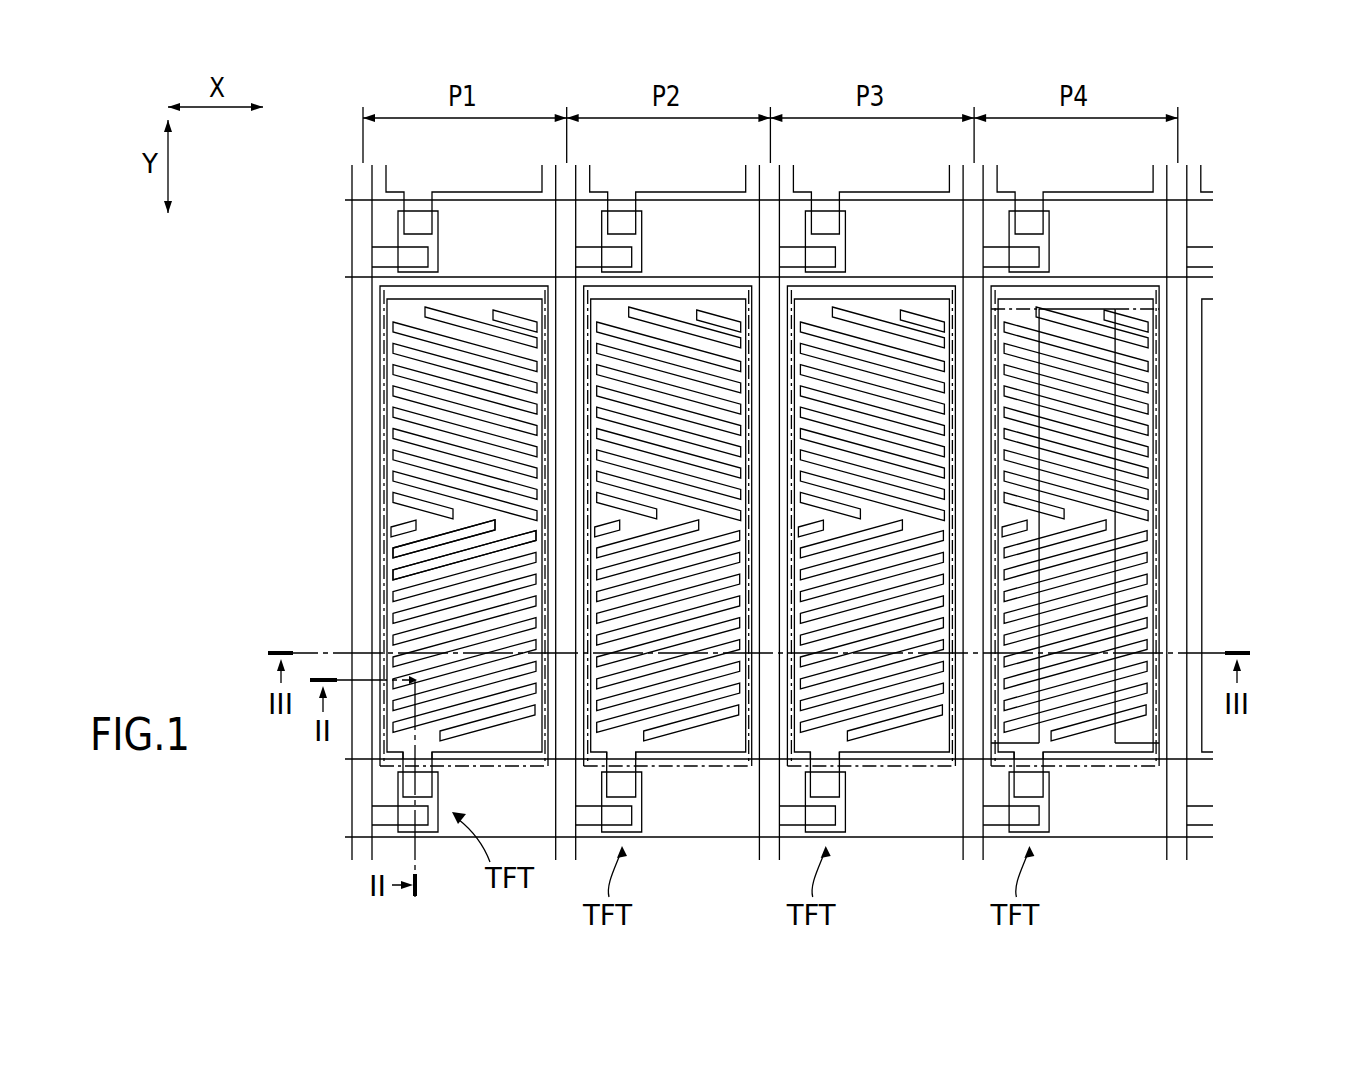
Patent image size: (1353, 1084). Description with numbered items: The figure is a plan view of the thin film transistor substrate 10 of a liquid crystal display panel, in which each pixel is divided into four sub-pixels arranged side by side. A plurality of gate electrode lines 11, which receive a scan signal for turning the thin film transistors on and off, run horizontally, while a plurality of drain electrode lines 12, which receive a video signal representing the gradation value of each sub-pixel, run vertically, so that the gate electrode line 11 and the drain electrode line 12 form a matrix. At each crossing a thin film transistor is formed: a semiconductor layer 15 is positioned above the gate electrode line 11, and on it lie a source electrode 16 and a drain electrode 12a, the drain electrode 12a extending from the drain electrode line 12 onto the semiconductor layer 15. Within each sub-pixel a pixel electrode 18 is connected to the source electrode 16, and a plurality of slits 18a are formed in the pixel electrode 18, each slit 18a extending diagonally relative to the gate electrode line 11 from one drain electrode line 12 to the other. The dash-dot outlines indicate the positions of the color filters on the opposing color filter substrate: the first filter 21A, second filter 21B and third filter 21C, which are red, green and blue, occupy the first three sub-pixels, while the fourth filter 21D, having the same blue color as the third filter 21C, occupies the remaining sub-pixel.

The TFT substrate 10 is at (1272, 139).
The gate electrode line 11 is at (380, 199).
The drain electrode line 12 is at (552, 370).
The drain electrode 12a is at (423, 822).
The semiconductor layer 15 is at (403, 802).
The source electrode 16 is at (405, 783).
The pixel electrode 18 is at (401, 521).
The slit 18a is at (402, 574).
The first filter 21A is at (380, 430).
The second filter 21B is at (667, 768).
The third filter 21C is at (871, 768).
The fourth filter 21D is at (1074, 768).